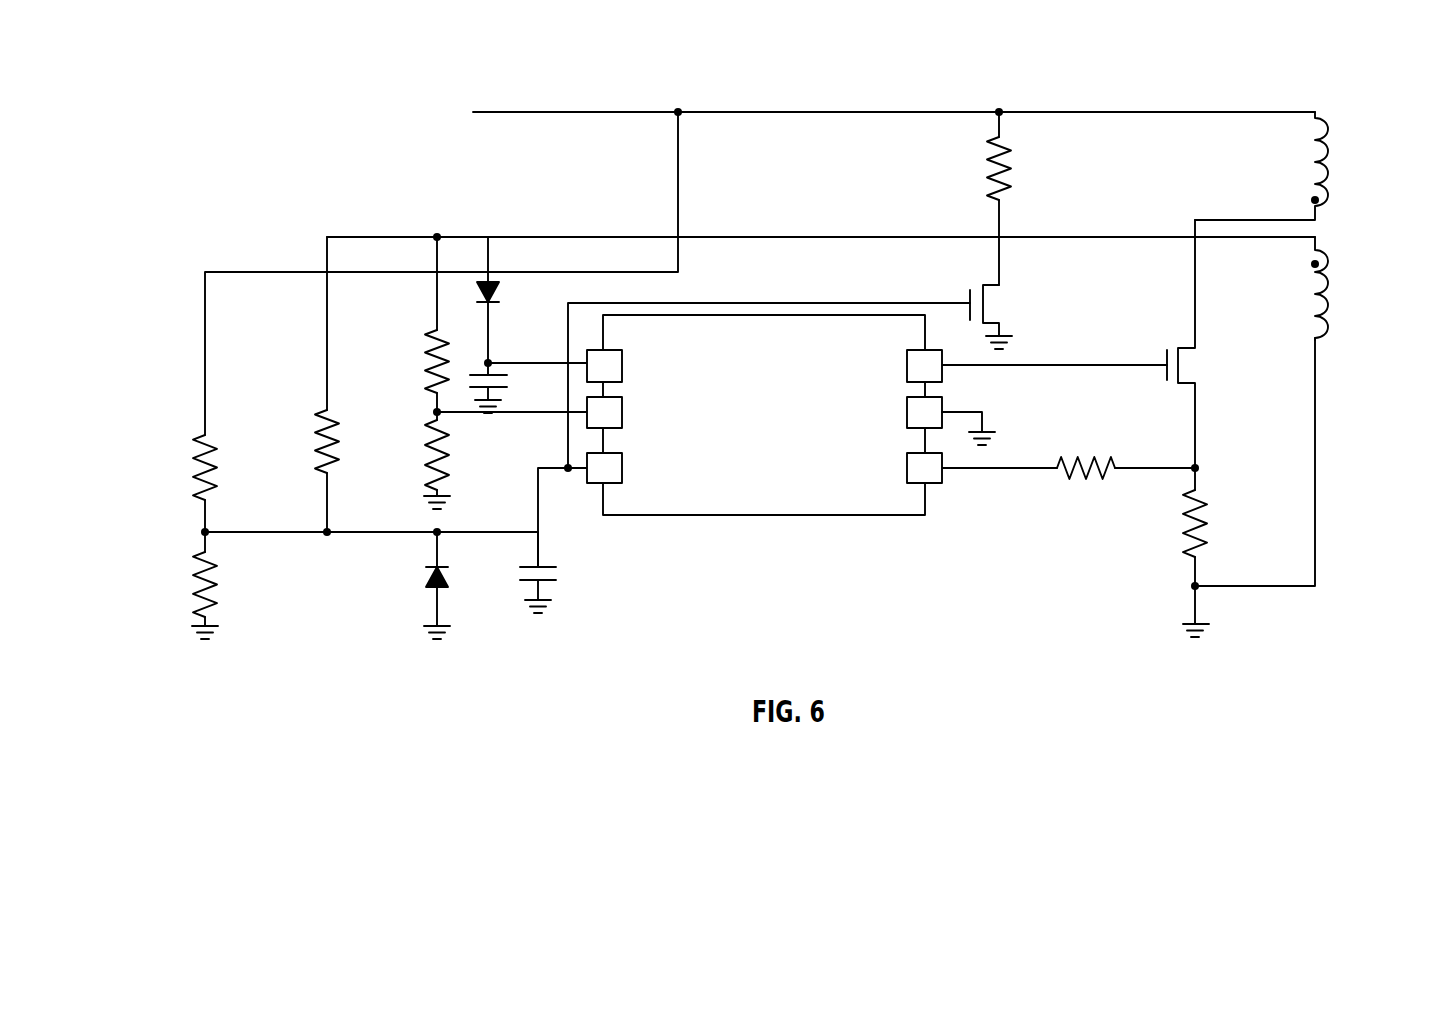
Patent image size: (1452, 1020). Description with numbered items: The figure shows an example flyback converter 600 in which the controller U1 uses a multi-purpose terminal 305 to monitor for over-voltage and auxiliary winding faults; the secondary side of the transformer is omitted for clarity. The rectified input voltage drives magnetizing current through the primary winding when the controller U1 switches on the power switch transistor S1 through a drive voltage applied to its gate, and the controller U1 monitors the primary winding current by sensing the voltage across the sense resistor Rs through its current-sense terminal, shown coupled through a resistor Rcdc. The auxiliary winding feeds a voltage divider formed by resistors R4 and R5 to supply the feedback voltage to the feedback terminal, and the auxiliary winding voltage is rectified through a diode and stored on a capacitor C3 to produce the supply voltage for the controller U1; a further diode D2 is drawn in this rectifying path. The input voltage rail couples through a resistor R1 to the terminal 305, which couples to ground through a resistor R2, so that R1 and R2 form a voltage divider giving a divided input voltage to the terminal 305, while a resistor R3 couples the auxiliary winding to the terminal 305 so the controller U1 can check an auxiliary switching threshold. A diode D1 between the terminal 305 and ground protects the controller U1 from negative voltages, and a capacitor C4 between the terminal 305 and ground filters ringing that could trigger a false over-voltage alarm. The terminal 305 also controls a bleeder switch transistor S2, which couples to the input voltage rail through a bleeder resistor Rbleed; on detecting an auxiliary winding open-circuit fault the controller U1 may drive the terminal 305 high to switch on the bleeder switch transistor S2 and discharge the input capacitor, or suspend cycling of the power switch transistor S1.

The flyback converter 600 is at (397, 68).
The terminal 305 is at (593, 486).
The resistor R1 is at (187, 467).
The resistor R2 is at (187, 595).
The resistor R3 is at (310, 441).
The resistor R4 is at (420, 361).
The resistor R5 is at (421, 464).
The diode D1 is at (419, 599).
The diode D2 is at (506, 295).
The capacitor C3 is at (510, 390).
The capacitor C4 is at (557, 587).
The controller U1 is at (791, 415).
The power switch transistor S1 is at (1203, 344).
The bleeder switch transistor S2 is at (1008, 317).
The bleeder resistor Rbleed is at (1045, 184).
The resistor Rcdc is at (1089, 488).
The sense resistor Rs is at (1213, 523).